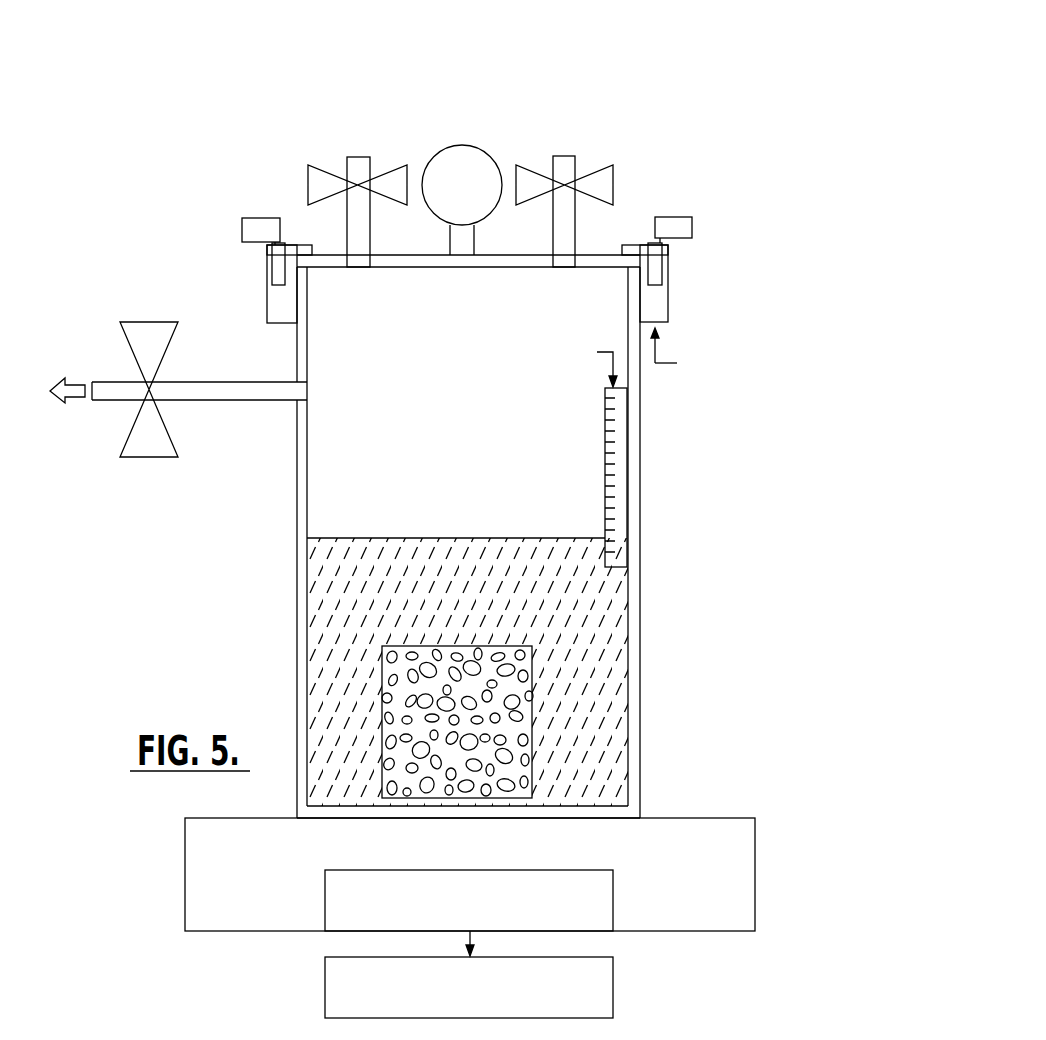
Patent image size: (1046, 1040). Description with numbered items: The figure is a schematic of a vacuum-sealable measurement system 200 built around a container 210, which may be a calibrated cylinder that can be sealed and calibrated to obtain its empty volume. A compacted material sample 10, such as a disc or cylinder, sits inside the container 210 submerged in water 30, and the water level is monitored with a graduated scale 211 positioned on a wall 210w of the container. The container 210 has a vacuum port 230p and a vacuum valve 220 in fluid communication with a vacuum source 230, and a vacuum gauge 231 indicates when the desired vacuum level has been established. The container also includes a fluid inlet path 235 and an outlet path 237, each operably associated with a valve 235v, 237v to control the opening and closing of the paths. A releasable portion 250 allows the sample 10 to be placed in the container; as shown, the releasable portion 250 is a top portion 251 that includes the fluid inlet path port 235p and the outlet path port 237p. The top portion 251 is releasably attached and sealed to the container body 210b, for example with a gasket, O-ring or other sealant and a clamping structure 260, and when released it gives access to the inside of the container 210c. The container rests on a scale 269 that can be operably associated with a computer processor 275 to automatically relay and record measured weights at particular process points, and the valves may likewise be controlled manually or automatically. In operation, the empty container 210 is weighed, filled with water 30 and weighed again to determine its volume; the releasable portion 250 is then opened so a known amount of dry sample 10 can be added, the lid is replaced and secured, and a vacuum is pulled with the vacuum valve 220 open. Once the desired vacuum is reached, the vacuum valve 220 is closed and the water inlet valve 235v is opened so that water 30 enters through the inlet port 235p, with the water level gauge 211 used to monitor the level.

The measurement system 200 is at (243, 90).
The container 210 is at (266, 549).
The inside of the container 210c is at (328, 493).
The wall of the container 210w is at (632, 482).
The container body 210b is at (640, 587).
The graduated scale 211 is at (620, 455).
The vacuum valve 220 is at (131, 349).
The vacuum source 230 is at (57, 414).
The vacuum port 230p is at (213, 395).
The vacuum gauge 231 is at (568, 131).
The fluid inlet path 235 is at (360, 162).
The water inlet valve 235v is at (318, 183).
The fluid inlet path port 235p is at (360, 265).
The outlet path 237 is at (565, 160).
The outlet valve 237v is at (607, 183).
The outlet path port 237p is at (563, 263).
The releasable portion 250 is at (593, 258).
The top portion 251 is at (500, 263).
The clamping structure 260 is at (270, 260).
The scale 269 is at (597, 913).
The computer processor 275 is at (325, 985).
The water 30 is at (617, 632).
The compacted material sample 10 is at (518, 738).